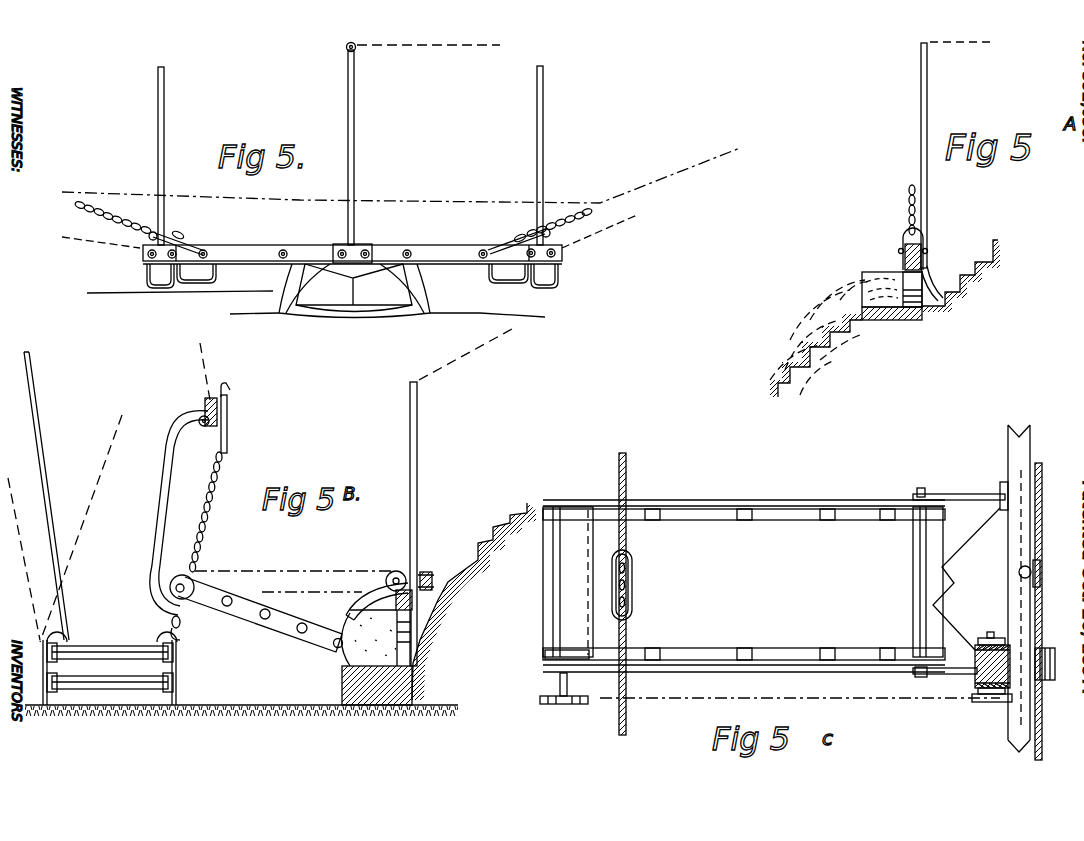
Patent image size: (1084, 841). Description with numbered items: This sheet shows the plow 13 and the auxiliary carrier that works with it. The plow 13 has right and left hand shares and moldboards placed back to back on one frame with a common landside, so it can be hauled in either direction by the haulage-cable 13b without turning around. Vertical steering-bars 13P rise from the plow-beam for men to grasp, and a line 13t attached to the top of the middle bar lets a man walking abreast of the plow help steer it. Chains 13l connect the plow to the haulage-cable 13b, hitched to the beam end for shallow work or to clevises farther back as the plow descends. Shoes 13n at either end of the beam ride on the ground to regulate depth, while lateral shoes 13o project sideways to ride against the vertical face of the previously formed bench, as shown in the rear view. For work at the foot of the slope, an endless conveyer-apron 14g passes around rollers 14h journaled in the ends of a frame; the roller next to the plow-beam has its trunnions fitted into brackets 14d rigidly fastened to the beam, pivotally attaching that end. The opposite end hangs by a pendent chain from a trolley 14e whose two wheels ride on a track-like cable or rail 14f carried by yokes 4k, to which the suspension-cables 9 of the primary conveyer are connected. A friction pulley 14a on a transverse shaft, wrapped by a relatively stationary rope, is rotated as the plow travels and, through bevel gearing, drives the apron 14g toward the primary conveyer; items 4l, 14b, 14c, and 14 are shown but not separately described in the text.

In FIG. 5, the plow 13 is at (352, 268).
In FIG. 5A, the plow 13 is at (895, 252).
In FIG. 5, the steering-bars 13P is at (365, 144).
In FIG. 5A, the steering-bars 13P is at (941, 155).
In FIG. 5B, the steering-bars 13P is at (461, 497).
In FIG. 5, the chains 13l is at (349, 227).
In FIG. 5, the shoes 13n is at (147, 268).
In FIG. 5B, the shoes 13n is at (411, 618).
In FIG. 5, the lateral shoes 13o is at (213, 278).
In FIG. 5A, the lateral shoes 13o is at (936, 284).
In FIG. 5, the haulage-cable 13b is at (401, 175).
In FIG. 5, the line 13t is at (463, 43).
In FIG. 5A, the line 13t is at (999, 44).
In FIG. 5B, the lever 4l is at (46, 496).
In FIG. 5B, the yokes 4k is at (163, 526).
In FIG. 5B, the suspension-cables 9 is at (109, 490).
In FIG. 5B, the track-like cable or rail 14f is at (218, 470).
In FIG. 5C, the track-like cable or rail 14f is at (633, 582).
In FIG. 5B, the trolley 14e is at (218, 412).
In FIG. 5C, the trolley 14e is at (627, 462).
In FIG. 5B, the rollers 14h is at (196, 578).
In FIG. 5C, the rollers 14h is at (567, 657).
In FIG. 5B, the endless conveyer-apron 14g is at (268, 603).
In FIG. 5C, the endless conveyer-apron 14g is at (744, 582).
In FIG. 5B, the brackets or hangers 14d is at (369, 601).
In FIG. 5C, the brackets or hangers 14d is at (960, 584).
In FIG. 5B, the wheel / plate 14c is at (392, 572).
In FIG. 5C, the wheel / plate 14c is at (1045, 720).
In FIG. 5B, the friction-drum or pulley 14a is at (430, 571).
In FIG. 5C, the friction-drum or pulley 14a is at (1056, 650).
In FIG. 5C, the gear 14b is at (978, 665).
In FIG. 5C, the post 14 is at (1042, 497).